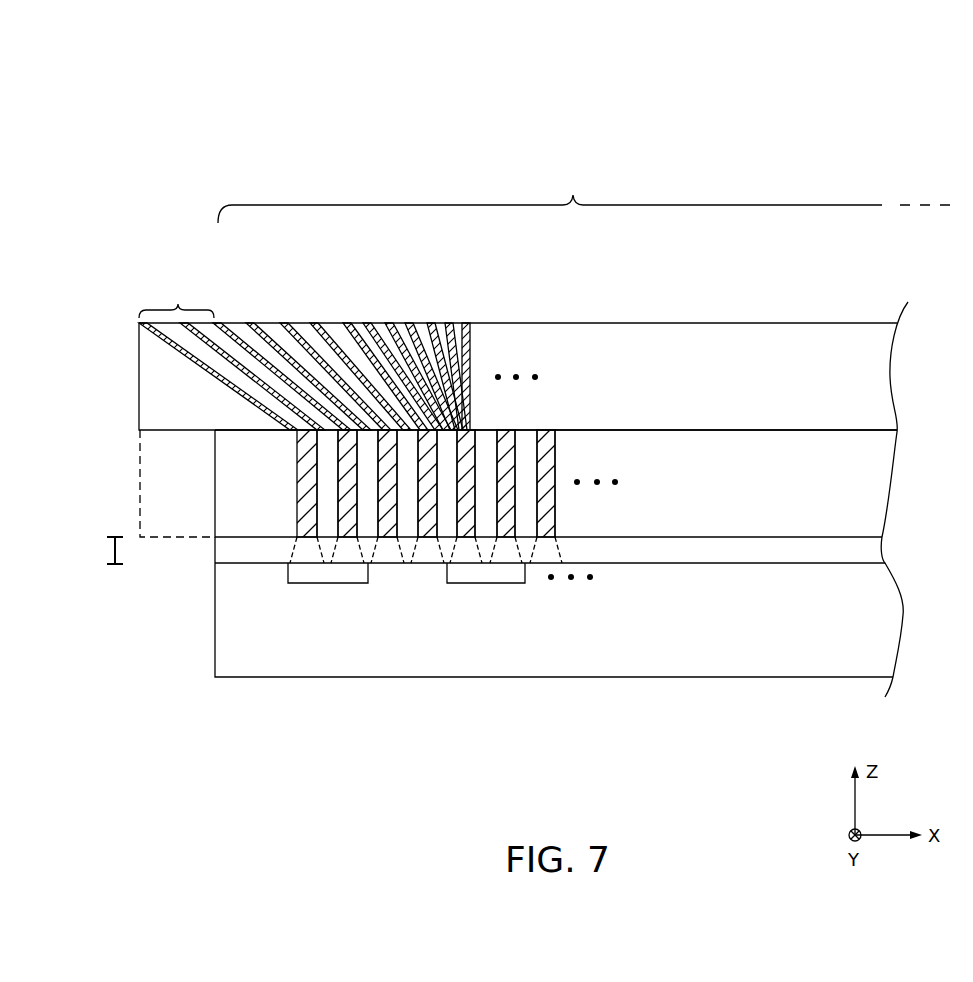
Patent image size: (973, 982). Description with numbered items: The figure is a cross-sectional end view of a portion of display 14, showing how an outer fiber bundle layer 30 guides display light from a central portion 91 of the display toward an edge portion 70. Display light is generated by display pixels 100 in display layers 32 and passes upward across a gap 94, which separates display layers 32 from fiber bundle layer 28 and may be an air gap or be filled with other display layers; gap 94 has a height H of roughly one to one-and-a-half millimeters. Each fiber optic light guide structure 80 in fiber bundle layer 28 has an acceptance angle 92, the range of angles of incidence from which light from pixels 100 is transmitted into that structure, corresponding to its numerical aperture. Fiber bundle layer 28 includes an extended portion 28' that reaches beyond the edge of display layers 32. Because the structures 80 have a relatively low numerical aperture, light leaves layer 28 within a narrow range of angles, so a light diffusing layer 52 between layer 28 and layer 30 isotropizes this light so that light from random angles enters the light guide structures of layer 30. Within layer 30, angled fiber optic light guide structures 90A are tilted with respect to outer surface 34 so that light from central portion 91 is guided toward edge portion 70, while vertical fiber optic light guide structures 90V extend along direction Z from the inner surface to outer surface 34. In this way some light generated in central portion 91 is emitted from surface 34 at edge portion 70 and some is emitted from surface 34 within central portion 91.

The display 14 is at (770, 98).
The central portion 91 is at (584, 194).
The edge portion 70 is at (176, 300).
The angled fiber optic light guide structures 90A is at (292, 323).
The vertical fiber optic light guide structures 90V is at (477, 340).
The outer surface 34 is at (705, 320).
The fiber bundle layer 30 is at (866, 373).
The light diffusing layer 52 is at (908, 432).
The fiber bundle layer 28 is at (586, 483).
The extended portion 28' is at (142, 483).
The fiber optic light guide structures 80 is at (305, 485).
The acceptance angle 92 is at (297, 549).
The gap 94 is at (866, 548).
The display layers 32 is at (880, 614).
The display pixels 100 is at (327, 571).
The height H is at (110, 549).